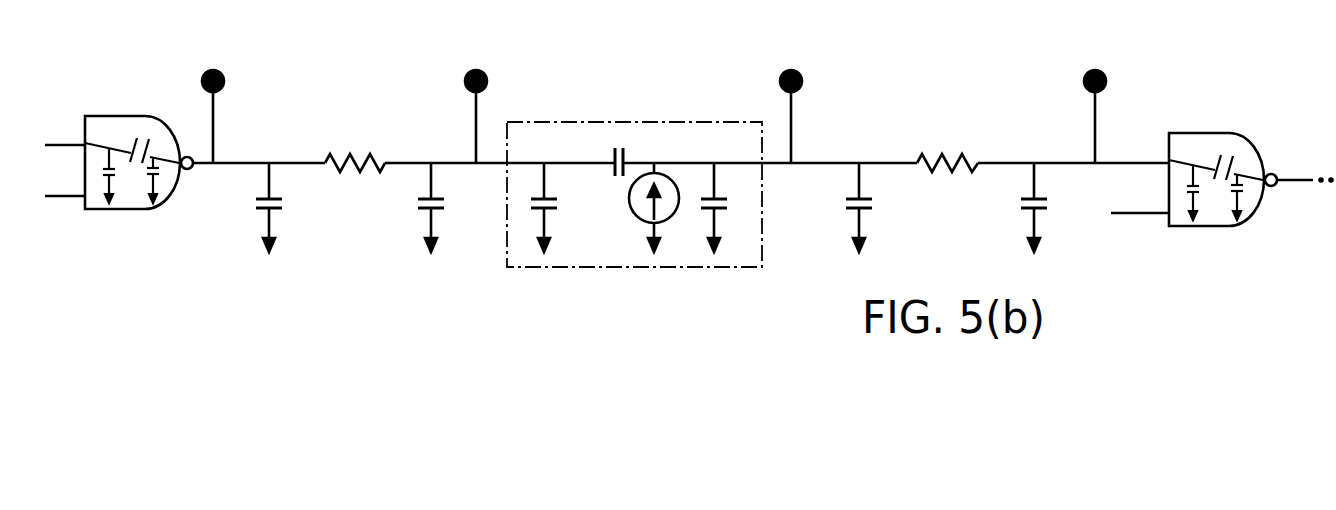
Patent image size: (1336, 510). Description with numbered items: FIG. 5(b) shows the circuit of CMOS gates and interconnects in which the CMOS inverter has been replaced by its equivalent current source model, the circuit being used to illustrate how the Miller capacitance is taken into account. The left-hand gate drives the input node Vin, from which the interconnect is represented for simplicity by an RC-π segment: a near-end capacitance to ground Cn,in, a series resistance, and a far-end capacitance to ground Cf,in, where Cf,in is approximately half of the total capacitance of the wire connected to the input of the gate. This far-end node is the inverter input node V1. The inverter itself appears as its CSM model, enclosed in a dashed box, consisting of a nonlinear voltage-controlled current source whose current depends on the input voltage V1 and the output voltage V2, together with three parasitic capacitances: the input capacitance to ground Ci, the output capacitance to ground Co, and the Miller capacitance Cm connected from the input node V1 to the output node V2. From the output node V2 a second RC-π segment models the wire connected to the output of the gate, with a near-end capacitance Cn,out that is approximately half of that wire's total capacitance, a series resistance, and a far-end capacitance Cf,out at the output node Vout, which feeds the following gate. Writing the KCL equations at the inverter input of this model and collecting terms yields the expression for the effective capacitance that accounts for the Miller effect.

The input voltage Vin is at (206, 91).
The input node voltage of the inverter V1 is at (468, 91).
The output node voltage of the inverter V2 is at (784, 91).
The output voltage Vout is at (1095, 91).
The near-end input wire capacitance Cn,in is at (241, 207).
The far-end input wire capacitance Cf,in is at (405, 207).
The input capacitance Ci is at (558, 207).
The output capacitance Co is at (731, 207).
The Miller capacitance Cm is at (609, 128).
The near-end output wire capacitance Cn,out is at (825, 207).
The far-end output wire capacitance Cf,out is at (1004, 207).